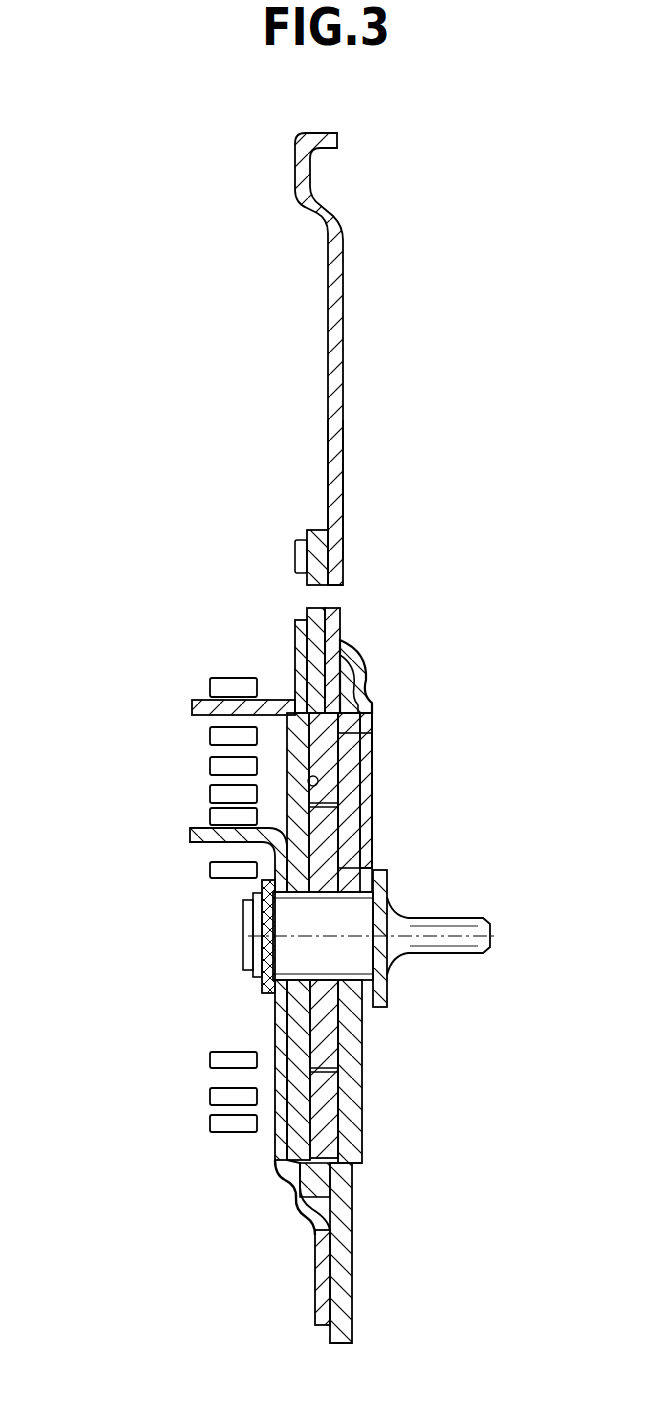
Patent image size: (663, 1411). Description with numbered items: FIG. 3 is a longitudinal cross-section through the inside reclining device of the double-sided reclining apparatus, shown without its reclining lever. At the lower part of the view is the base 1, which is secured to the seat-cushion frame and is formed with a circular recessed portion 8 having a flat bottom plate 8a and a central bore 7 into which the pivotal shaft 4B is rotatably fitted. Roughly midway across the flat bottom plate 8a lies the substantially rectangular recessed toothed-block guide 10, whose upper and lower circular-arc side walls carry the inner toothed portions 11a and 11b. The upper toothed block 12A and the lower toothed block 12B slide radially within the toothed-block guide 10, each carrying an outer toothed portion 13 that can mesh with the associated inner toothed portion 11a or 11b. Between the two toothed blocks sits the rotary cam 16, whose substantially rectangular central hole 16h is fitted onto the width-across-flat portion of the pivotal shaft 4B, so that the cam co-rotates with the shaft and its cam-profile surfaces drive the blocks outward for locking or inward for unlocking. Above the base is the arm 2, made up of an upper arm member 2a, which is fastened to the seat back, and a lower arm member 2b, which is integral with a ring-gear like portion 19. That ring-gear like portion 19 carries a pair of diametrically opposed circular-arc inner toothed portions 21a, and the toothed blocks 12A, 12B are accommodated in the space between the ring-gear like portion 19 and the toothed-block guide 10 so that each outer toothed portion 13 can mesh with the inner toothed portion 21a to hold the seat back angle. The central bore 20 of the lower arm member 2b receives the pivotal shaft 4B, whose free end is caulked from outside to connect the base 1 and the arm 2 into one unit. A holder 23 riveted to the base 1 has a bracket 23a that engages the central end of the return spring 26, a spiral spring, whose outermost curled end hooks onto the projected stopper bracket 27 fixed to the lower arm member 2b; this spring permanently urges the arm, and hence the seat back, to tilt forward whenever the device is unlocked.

The base 1 is at (352, 1290).
The arm 2 is at (343, 386).
The upper arm member 2a is at (342, 498).
The lower arm member 2b is at (322, 531).
The inside pivotal shaft 4B is at (480, 915).
The central bore 7 is at (357, 977).
The circular recessed portion 8 is at (340, 762).
The flat bottom plate 8a is at (350, 812).
The recessed toothed-block guide 10 is at (333, 1055).
The inner toothed portion 11a is at (372, 718).
The inner toothed portion 11b is at (342, 1172).
The upper toothed block 12A is at (305, 745).
The lower toothed block 12B is at (333, 1128).
The outer toothed portion 13 is at (357, 665).
The rotary cam 16 is at (375, 848).
The central hole 16h is at (354, 875).
The ring-gear like portion 19 is at (312, 799).
The central bore 20 is at (262, 887).
The inner toothed portion 21a is at (297, 1200).
The holder 23 is at (275, 1005).
The bracket 23a is at (191, 834).
The return spring 26 is at (230, 678).
The projected stopper bracket 27 is at (192, 703).